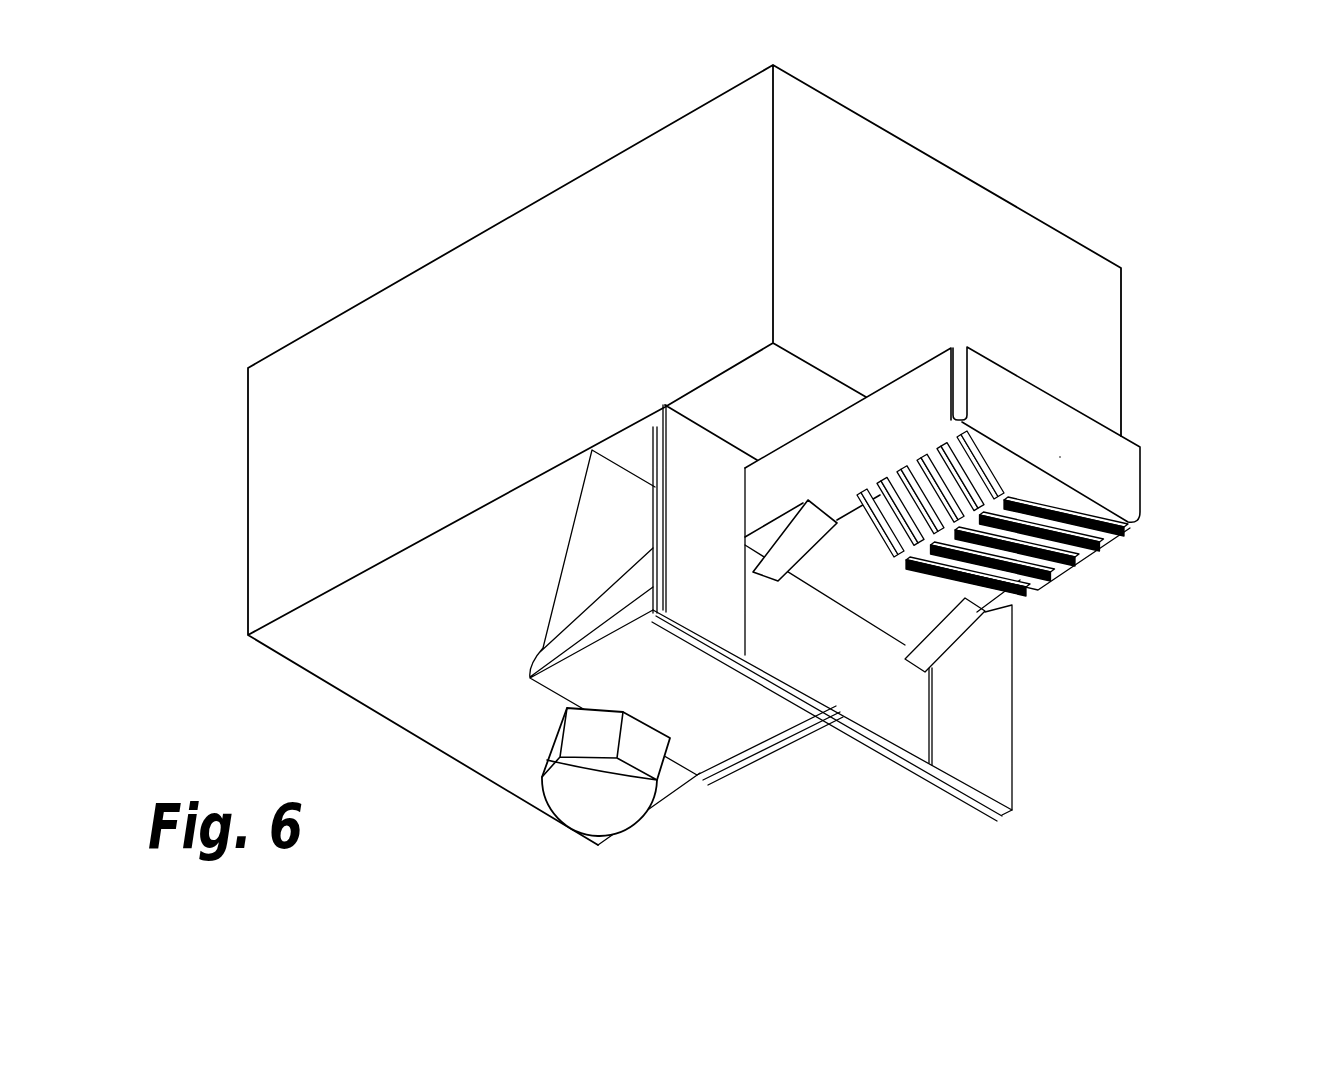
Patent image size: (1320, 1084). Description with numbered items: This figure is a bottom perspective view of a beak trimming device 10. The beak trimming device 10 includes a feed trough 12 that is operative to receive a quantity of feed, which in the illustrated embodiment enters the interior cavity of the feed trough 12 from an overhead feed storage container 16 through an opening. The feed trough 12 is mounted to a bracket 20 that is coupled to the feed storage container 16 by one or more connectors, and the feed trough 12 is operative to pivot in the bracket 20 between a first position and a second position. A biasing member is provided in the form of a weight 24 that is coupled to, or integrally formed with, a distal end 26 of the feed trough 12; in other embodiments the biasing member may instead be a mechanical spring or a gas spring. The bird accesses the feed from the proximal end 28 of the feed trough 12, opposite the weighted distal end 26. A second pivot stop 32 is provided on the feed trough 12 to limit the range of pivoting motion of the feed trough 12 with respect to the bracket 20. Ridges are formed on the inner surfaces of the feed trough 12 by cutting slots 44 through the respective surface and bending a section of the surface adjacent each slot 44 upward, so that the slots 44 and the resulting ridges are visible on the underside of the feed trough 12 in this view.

The beak trimming device 10 is at (1154, 812).
The feed trough 12 is at (838, 575).
The feed storage container 16 is at (1121, 311).
The bracket 20 is at (1012, 690).
The weight 24 is at (573, 831).
The distal end 26 is at (536, 709).
The proximal end 28 is at (1082, 438).
The second pivot stop 32 is at (800, 545).
The slots 44 is at (1014, 577).